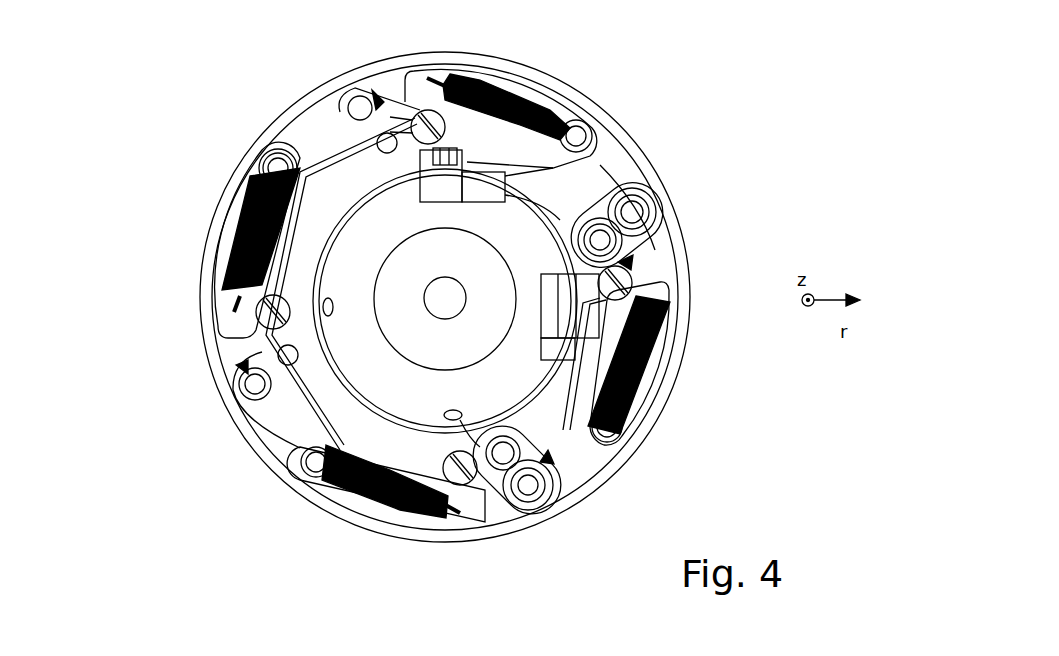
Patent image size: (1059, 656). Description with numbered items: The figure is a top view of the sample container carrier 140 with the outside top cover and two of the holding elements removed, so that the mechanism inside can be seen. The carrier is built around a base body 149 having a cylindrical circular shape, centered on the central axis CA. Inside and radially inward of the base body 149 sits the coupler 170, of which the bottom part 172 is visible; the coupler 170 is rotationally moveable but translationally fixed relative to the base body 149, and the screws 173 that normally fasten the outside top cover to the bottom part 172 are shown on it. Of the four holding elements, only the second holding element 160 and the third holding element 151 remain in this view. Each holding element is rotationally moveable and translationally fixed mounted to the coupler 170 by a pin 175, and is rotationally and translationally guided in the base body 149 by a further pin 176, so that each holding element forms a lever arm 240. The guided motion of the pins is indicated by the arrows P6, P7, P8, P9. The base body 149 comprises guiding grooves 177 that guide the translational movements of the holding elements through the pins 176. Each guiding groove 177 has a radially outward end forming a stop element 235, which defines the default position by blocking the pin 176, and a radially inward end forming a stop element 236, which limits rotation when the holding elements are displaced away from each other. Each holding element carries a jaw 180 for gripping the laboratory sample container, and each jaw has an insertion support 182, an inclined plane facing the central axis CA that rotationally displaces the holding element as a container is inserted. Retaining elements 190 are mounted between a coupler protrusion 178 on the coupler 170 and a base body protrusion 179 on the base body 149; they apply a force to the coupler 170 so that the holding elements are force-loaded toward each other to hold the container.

The sample container carrier 140 is at (146, 134).
The base body 149 is at (650, 410).
The third holding element 151 is at (557, 188).
The second holding element 160 is at (548, 290).
The coupler 170 is at (312, 210).
The bottom part 172 is at (340, 262).
The screws 173 is at (255, 312).
The pins 175 is at (497, 452).
The pins 176 is at (530, 490).
The guiding grooves 177 is at (345, 112).
The coupler protrusion 178 is at (667, 282).
The base body protrusion 179 is at (615, 442).
The jaw 180 is at (472, 160).
The insertion support 182 is at (452, 180).
The retaining element 190 is at (368, 500).
The stop element 235 is at (352, 97).
The stop element 236 is at (343, 110).
The lever arm 240 is at (612, 158).
The central axis CA is at (445, 298).
The arrow P6 is at (380, 105).
The arrow P7 is at (635, 258).
The arrow P8 is at (550, 467).
The arrow P9 is at (240, 366).